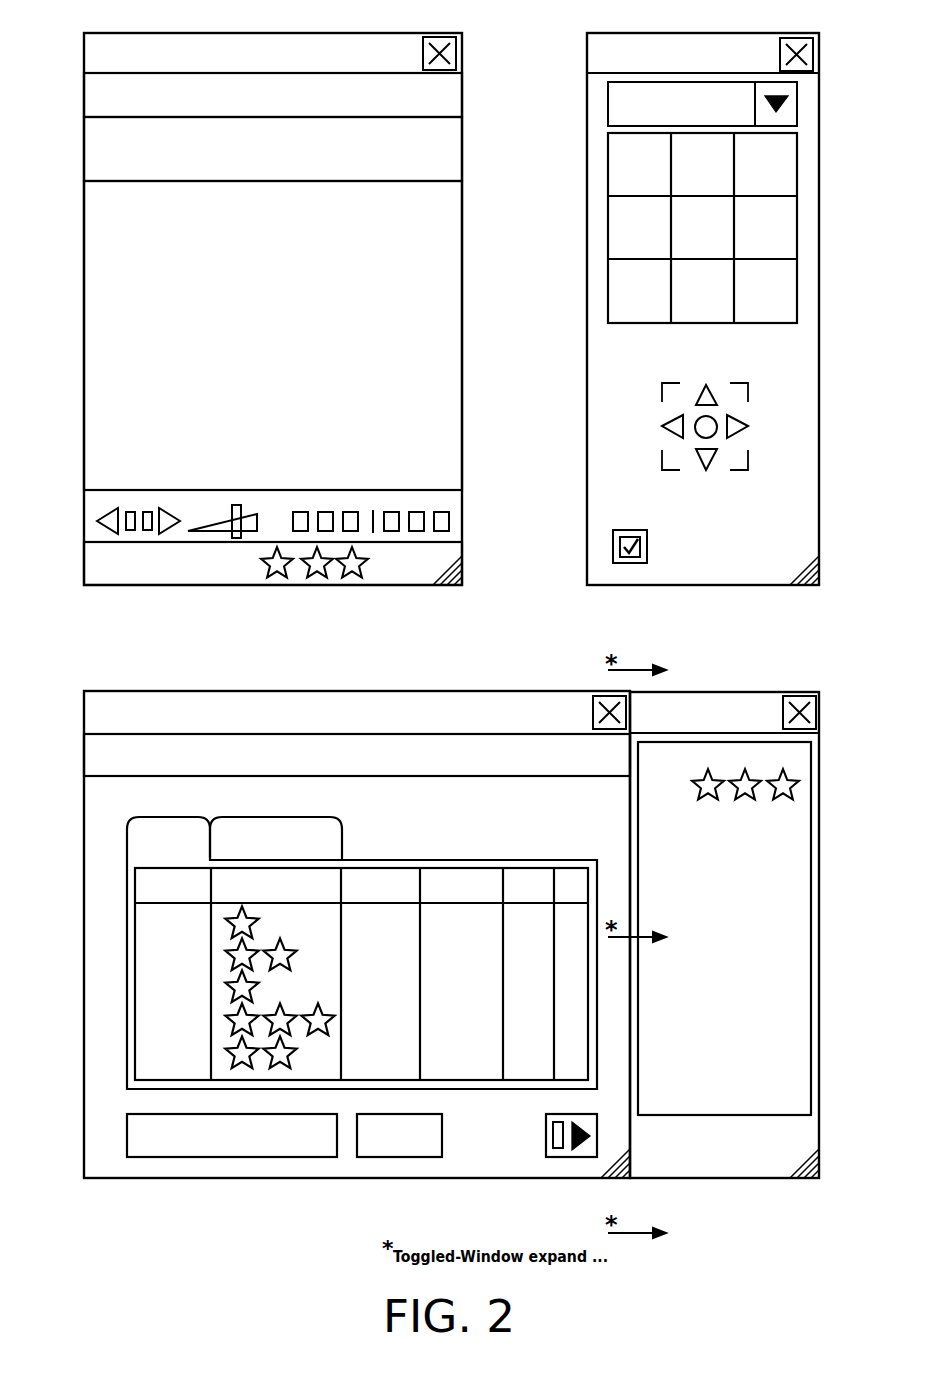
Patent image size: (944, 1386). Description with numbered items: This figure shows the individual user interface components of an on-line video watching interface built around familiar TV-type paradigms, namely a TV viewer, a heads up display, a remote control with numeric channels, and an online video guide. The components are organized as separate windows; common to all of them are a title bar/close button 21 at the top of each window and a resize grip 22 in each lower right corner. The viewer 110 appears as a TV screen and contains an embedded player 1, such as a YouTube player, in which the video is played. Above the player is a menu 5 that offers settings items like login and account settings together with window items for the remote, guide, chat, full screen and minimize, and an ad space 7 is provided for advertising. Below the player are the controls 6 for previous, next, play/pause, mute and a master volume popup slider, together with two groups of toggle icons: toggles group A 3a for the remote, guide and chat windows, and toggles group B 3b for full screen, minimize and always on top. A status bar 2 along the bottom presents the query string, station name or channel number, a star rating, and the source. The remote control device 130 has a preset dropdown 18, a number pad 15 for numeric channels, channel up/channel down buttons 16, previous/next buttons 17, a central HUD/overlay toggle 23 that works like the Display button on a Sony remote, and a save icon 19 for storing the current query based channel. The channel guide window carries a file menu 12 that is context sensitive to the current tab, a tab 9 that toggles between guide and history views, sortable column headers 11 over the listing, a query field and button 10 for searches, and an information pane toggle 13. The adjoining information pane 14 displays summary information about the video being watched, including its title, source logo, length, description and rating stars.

The embedded player 1 is at (442, 289).
The status bar 2 is at (252, 572).
The toggles group A 3a is at (340, 503).
The toggles group B 3b is at (408, 503).
The menu 5 is at (442, 97).
The controls 6 is at (248, 503).
The ad space 7 is at (442, 151).
The tab 9 is at (280, 815).
The query field and button 10 is at (211, 1157).
The sortable column headers 11 is at (395, 887).
The file menu 12 is at (107, 755).
The information pane toggle 13 is at (567, 1157).
The information pane 14 is at (798, 944).
The number pad 15 is at (628, 241).
The channel up/channel down 16 is at (706, 374).
The previous/next 17 is at (654, 426).
The preset dropdown 18 is at (628, 104).
The save icon 19 is at (605, 548).
The title bar/close button 21 is at (323, 42).
The resize grip 22 is at (463, 587).
The HUD/overlay toggle 23 is at (707, 428).
The viewer 110 is at (83, 290).
The remote control device 130 is at (820, 288).